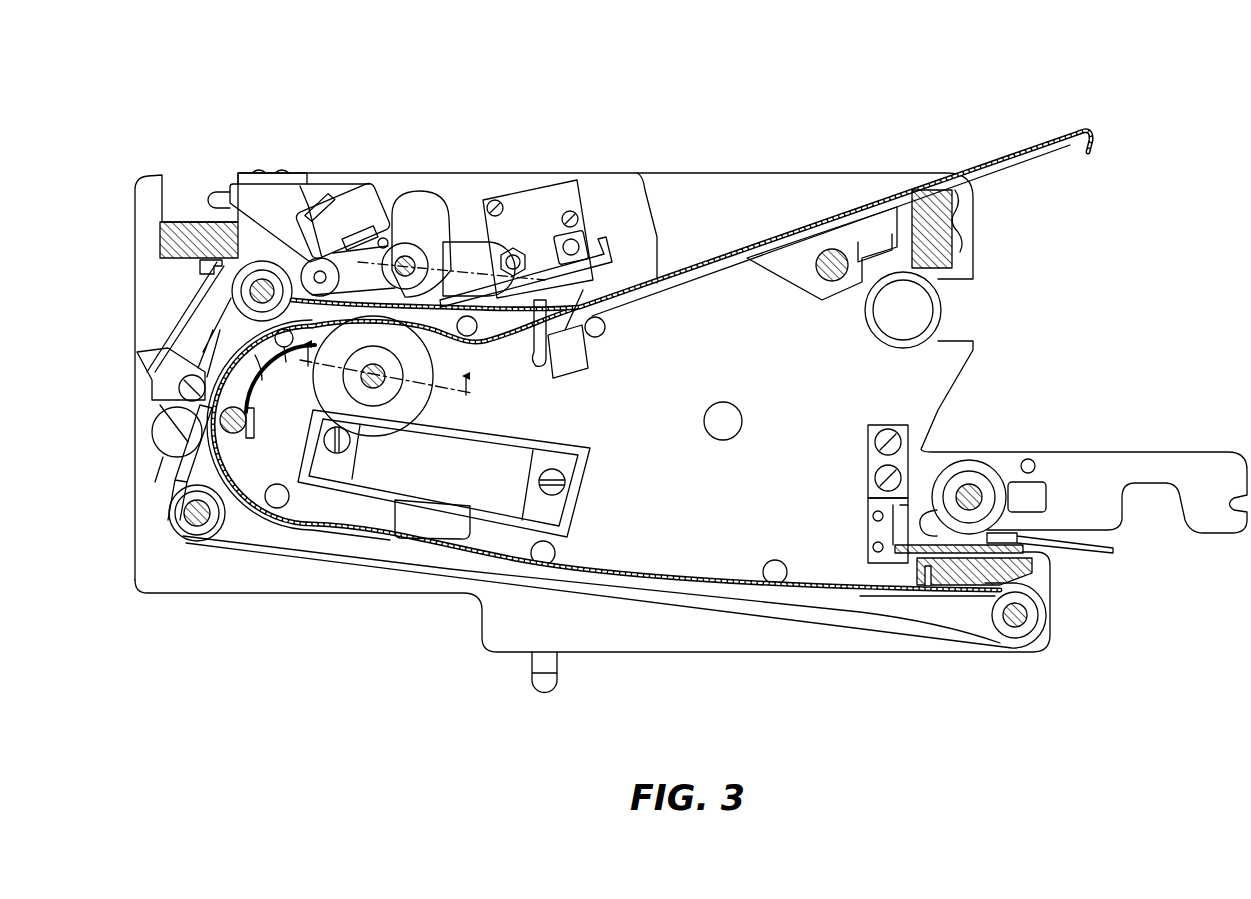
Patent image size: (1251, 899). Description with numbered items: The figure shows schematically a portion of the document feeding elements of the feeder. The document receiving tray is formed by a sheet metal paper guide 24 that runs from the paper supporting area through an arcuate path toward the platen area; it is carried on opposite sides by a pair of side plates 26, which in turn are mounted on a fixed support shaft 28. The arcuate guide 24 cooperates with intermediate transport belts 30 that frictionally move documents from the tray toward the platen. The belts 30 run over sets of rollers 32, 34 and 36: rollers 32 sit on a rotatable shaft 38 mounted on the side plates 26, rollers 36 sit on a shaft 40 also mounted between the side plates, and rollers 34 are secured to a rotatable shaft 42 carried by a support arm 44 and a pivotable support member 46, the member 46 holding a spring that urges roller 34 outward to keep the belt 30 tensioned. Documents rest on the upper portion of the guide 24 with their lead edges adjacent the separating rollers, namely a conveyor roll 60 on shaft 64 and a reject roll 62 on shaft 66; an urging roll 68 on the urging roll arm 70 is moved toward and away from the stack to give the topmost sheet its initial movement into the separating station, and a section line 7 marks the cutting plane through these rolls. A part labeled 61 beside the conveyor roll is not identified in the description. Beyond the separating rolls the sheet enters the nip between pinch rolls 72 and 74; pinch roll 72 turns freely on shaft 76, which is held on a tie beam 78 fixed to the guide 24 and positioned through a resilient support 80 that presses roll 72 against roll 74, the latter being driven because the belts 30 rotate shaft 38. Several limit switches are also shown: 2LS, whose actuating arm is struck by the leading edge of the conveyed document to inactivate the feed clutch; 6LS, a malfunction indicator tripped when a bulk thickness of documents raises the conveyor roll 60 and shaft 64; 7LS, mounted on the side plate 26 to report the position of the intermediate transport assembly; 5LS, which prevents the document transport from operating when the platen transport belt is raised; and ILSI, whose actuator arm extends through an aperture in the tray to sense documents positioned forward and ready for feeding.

The arcuate paper guide 24 is at (420, 342).
The side plates 26 is at (950, 392).
The support shaft 28 is at (942, 305).
The intermediate transport belts 30 is at (398, 563).
The rollers 32 is at (290, 262).
The rollers 34 is at (224, 525).
The rollers 36 is at (988, 614).
The rotatable shaft 38 is at (250, 292).
The shaft 40 is at (1030, 614).
The rotatable shaft 42 is at (190, 520).
The support arm 44 is at (165, 483).
The pivotable support member 46 is at (160, 440).
The conveyor roll 60 is at (410, 313).
The switch actuator 61 is at (380, 242).
The reject roll 62 is at (396, 420).
The shaft 64 is at (440, 197).
The shaft 66 is at (405, 390).
The urging roll 68 is at (483, 303).
The urging roll arm 70 is at (450, 246).
The pinch roll 72 is at (292, 337).
The pinch roll 74 is at (222, 322).
The shaft 76 is at (262, 366).
The tie beam 78 is at (238, 434).
The resilient support 80 is at (256, 420).
The limit switch 2LS is at (250, 388).
The limit switch 5LS is at (868, 530).
The limit switch 6LS is at (366, 192).
The limit switch 7LS is at (555, 688).
The limit switch 1LS-1 ILSI is at (530, 356).
The section line 7 is at (394, 376).